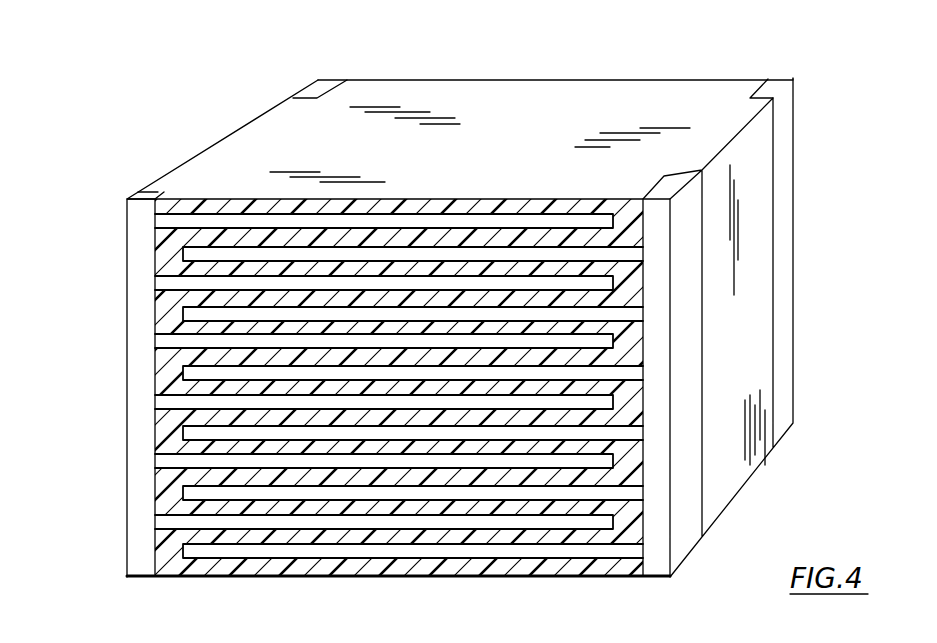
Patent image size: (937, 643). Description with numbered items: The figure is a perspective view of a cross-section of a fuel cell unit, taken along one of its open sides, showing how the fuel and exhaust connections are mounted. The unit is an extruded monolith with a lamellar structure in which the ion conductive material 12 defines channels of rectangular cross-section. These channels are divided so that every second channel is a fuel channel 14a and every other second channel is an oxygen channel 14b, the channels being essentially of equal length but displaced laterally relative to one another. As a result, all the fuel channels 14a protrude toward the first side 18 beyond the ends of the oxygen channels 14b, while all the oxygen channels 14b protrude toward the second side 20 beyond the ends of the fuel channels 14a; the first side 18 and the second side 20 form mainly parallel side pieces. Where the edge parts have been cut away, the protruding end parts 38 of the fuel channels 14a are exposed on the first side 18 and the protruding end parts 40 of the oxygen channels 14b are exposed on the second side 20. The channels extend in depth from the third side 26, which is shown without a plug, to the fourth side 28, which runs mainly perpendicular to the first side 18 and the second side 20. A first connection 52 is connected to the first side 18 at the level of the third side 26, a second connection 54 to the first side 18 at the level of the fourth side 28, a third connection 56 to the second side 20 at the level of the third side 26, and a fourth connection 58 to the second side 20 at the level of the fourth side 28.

The ion conductive material 12 is at (162, 255).
The fuel channels 14a is at (163, 345).
The oxygen channels 14b is at (700, 350).
The first side 18 is at (227, 135).
The second side 20 is at (737, 393).
The third side 26 is at (187, 577).
The fourth side 28 is at (528, 79).
The end parts of the fuel channels 38 is at (153, 458).
The end parts of the oxygen channels 40 is at (643, 313).
The first connection 52 is at (162, 185).
The second connection 54 is at (318, 85).
The third connection 56 is at (665, 189).
The fourth connection 58 is at (773, 87).